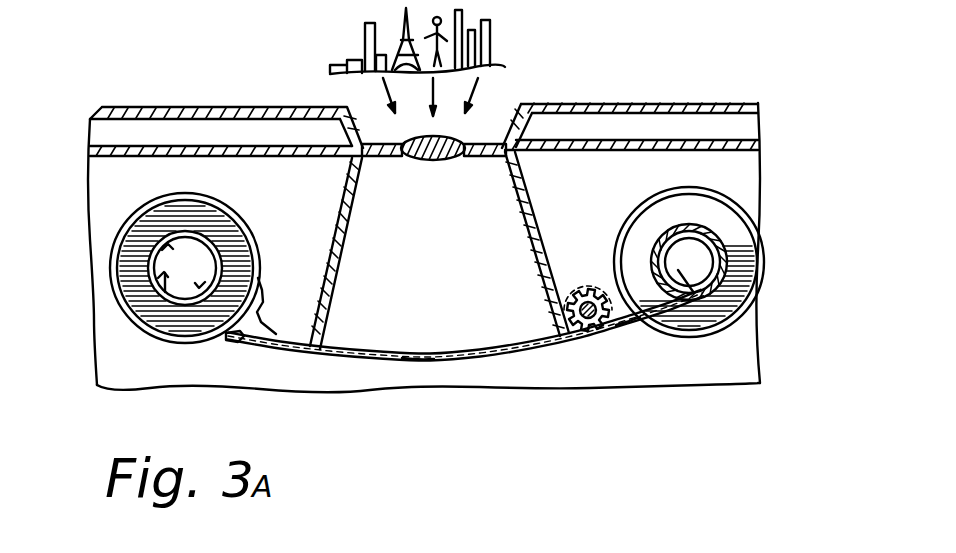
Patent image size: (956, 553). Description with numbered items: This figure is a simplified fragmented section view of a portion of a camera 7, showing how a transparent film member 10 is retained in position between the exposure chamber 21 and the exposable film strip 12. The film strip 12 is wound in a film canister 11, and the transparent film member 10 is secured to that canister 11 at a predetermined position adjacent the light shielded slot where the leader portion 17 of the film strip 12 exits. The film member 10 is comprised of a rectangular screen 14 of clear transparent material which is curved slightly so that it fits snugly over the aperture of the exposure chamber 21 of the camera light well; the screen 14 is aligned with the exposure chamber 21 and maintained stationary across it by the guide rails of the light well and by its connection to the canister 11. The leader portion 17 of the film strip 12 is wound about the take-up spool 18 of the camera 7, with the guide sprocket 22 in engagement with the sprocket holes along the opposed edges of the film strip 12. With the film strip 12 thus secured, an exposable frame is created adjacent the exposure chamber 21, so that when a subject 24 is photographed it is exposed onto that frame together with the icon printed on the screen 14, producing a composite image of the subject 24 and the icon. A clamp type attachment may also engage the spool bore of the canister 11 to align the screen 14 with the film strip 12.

The camera 7 is at (672, 103).
The transparent film member 10 is at (470, 346).
The film canister 11 is at (152, 202).
The exposable film strip 12 is at (280, 352).
The rectangular screen 14 is at (378, 352).
The leader portion 17 is at (632, 326).
The take-up spool 18 is at (633, 226).
The exposure chamber 21 is at (504, 205).
The guide sprocket 22 is at (580, 292).
The subject 24 is at (345, 44).